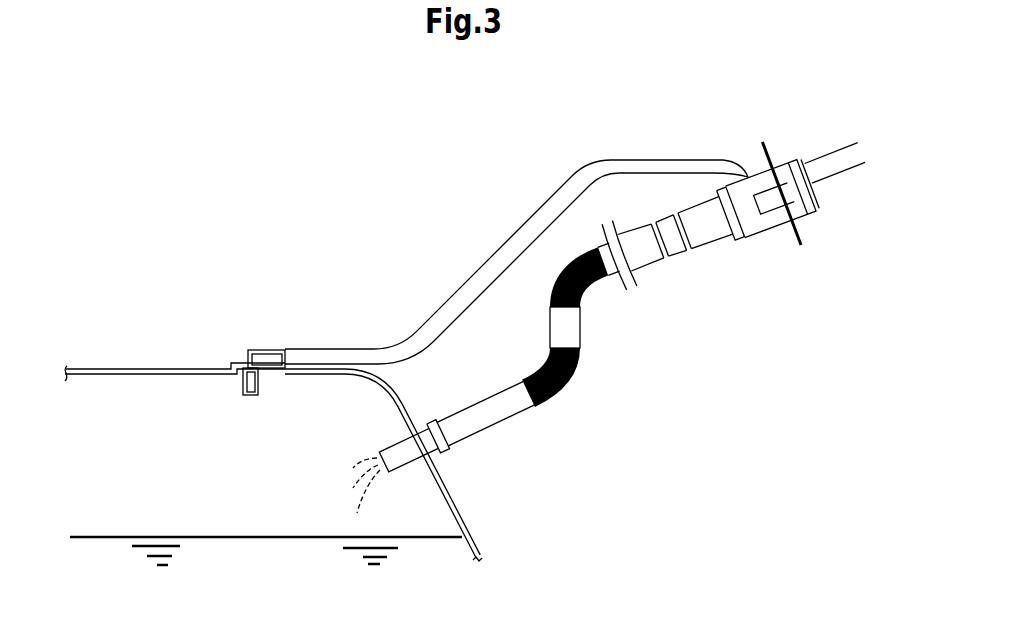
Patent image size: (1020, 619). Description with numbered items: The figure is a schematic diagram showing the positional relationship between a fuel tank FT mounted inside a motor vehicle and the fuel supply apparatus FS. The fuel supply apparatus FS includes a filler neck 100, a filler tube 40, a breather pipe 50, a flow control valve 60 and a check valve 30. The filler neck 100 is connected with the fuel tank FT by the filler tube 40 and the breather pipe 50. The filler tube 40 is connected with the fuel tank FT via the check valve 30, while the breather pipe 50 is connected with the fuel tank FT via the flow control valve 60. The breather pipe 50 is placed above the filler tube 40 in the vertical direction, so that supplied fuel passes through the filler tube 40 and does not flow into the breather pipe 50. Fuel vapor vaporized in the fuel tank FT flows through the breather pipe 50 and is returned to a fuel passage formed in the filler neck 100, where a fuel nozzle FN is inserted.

The check valve 30 is at (384, 468).
The filler tube 40 is at (580, 330).
The breather pipe 50 is at (465, 283).
The flow control valve 60 is at (258, 347).
The filler neck 100 is at (748, 235).
The fuel tank FT is at (107, 368).
The fuel supply apparatus FS is at (465, 182).
The fuel nozzle FN is at (823, 152).